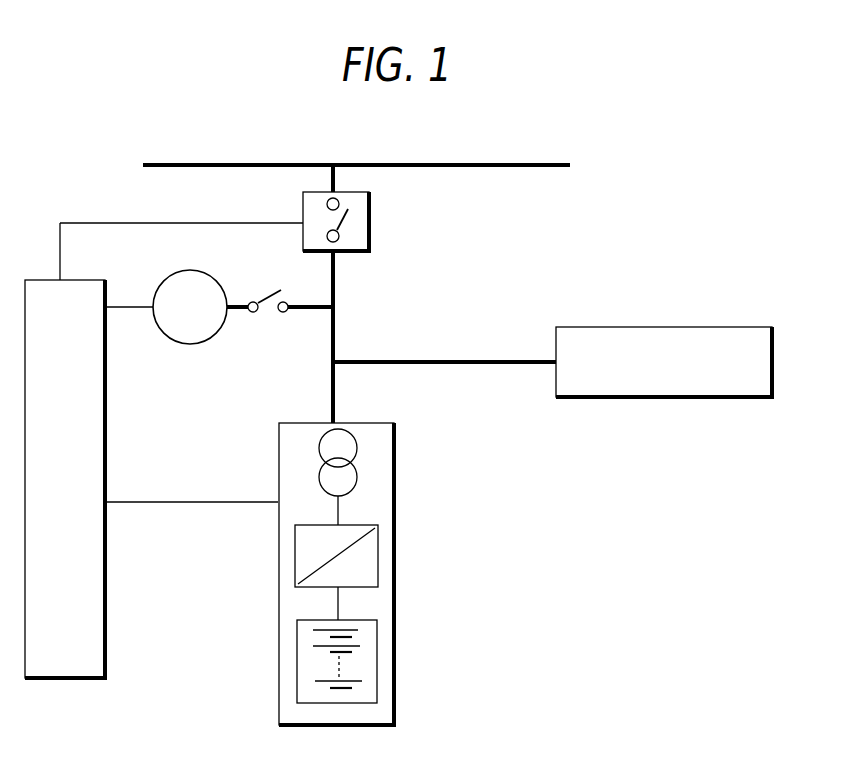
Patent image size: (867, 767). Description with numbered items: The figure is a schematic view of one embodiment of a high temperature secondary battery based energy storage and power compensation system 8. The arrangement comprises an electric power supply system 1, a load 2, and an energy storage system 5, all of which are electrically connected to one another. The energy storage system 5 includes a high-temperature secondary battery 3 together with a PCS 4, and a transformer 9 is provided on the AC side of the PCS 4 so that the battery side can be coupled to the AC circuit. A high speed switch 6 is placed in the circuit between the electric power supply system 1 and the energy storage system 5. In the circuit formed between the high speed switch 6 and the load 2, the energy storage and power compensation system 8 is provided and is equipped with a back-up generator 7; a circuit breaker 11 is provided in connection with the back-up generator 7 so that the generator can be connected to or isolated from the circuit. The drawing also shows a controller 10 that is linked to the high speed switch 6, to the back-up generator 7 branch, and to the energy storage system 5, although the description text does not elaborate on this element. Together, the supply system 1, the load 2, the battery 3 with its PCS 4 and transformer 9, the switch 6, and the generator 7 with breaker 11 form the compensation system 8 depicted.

The electric power supply system 1 is at (196, 163).
The load 2 is at (676, 334).
The high-temperature secondary battery 3 is at (377, 650).
The PCS 4 is at (378, 543).
The energy storage system 5 is at (279, 636).
The high speed switch 6 is at (371, 232).
The back-up generator 7 is at (180, 345).
The high temperature secondary battery based energy storage and power compensation s 8 is at (623, 220).
The transformer 9 is at (355, 450).
The controller 10 is at (100, 556).
The circuit breaker 11 is at (257, 318).